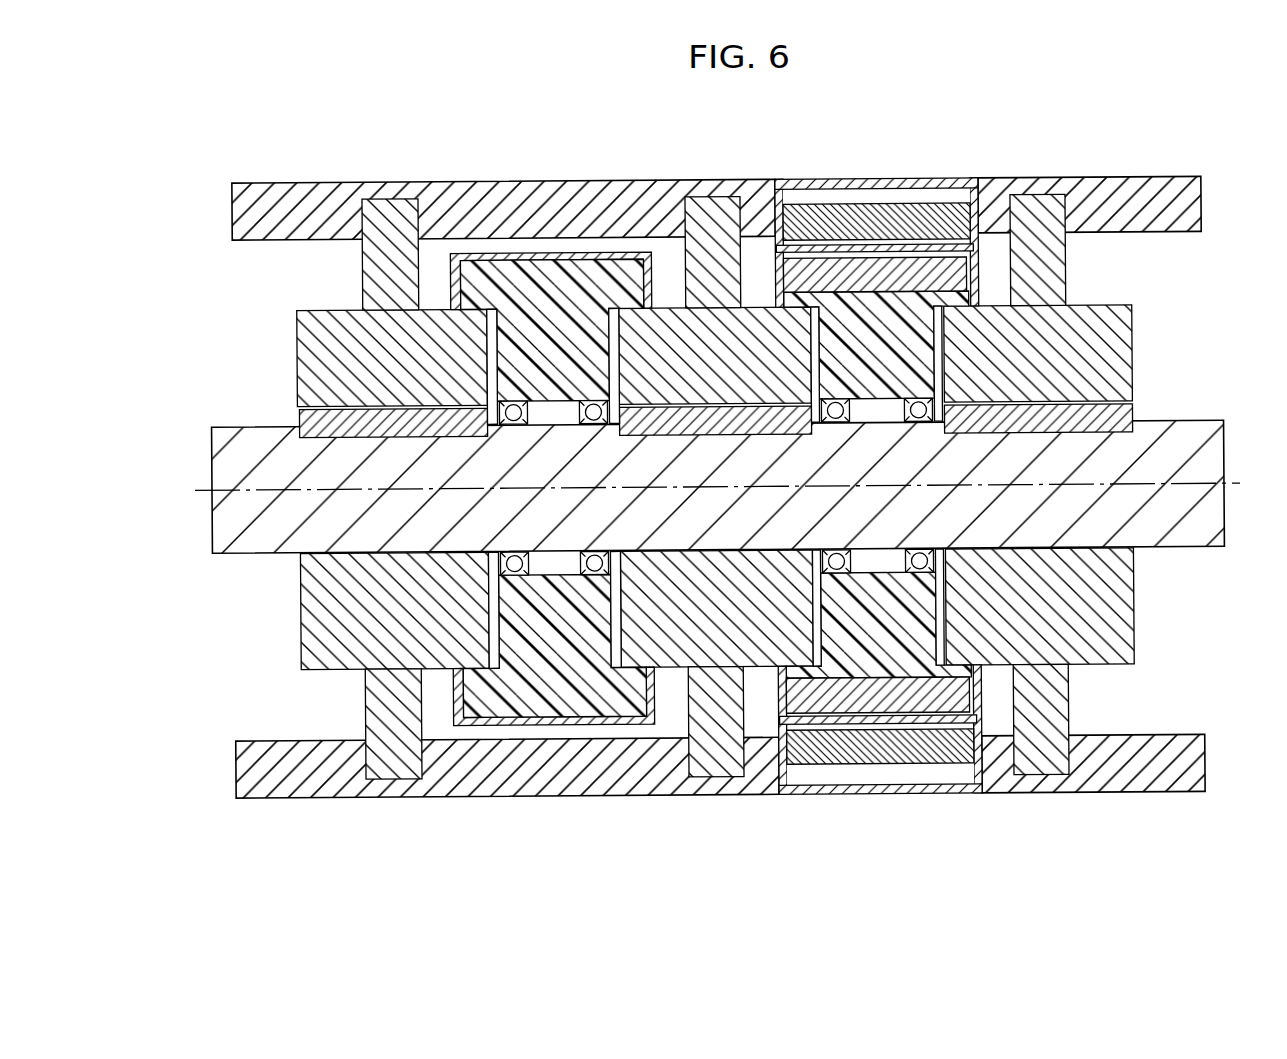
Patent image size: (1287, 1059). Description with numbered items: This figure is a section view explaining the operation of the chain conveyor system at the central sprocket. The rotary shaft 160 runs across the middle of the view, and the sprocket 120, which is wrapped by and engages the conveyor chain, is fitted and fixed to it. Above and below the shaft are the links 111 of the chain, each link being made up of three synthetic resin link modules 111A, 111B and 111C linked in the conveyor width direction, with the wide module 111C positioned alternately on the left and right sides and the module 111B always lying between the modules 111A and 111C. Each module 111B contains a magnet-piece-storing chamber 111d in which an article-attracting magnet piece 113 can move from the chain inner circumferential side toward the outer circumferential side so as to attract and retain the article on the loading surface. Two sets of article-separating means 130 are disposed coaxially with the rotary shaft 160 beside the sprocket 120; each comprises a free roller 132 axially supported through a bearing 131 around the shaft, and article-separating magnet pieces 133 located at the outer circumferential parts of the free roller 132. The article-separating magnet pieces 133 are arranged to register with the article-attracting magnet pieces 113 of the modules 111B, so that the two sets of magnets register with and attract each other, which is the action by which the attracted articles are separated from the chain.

The synthetic resin link 111 is at (718, 492).
The synthetic resin link module 111A is at (487, 182).
The synthetic resin link module 111B is at (878, 492).
The synthetic resin link module 111C is at (1106, 177).
The magnet-piece-storing chamber 111d is at (880, 187).
The article-attracting magnet piece 113 is at (881, 480).
The sprocket 120 is at (413, 375).
The article-separating means 130 is at (714, 488).
The bearing 131 is at (495, 563).
The free roller 132 is at (500, 618).
The article-separating magnet piece 133 is at (965, 275).
The rotary shaft 160 is at (1185, 428).